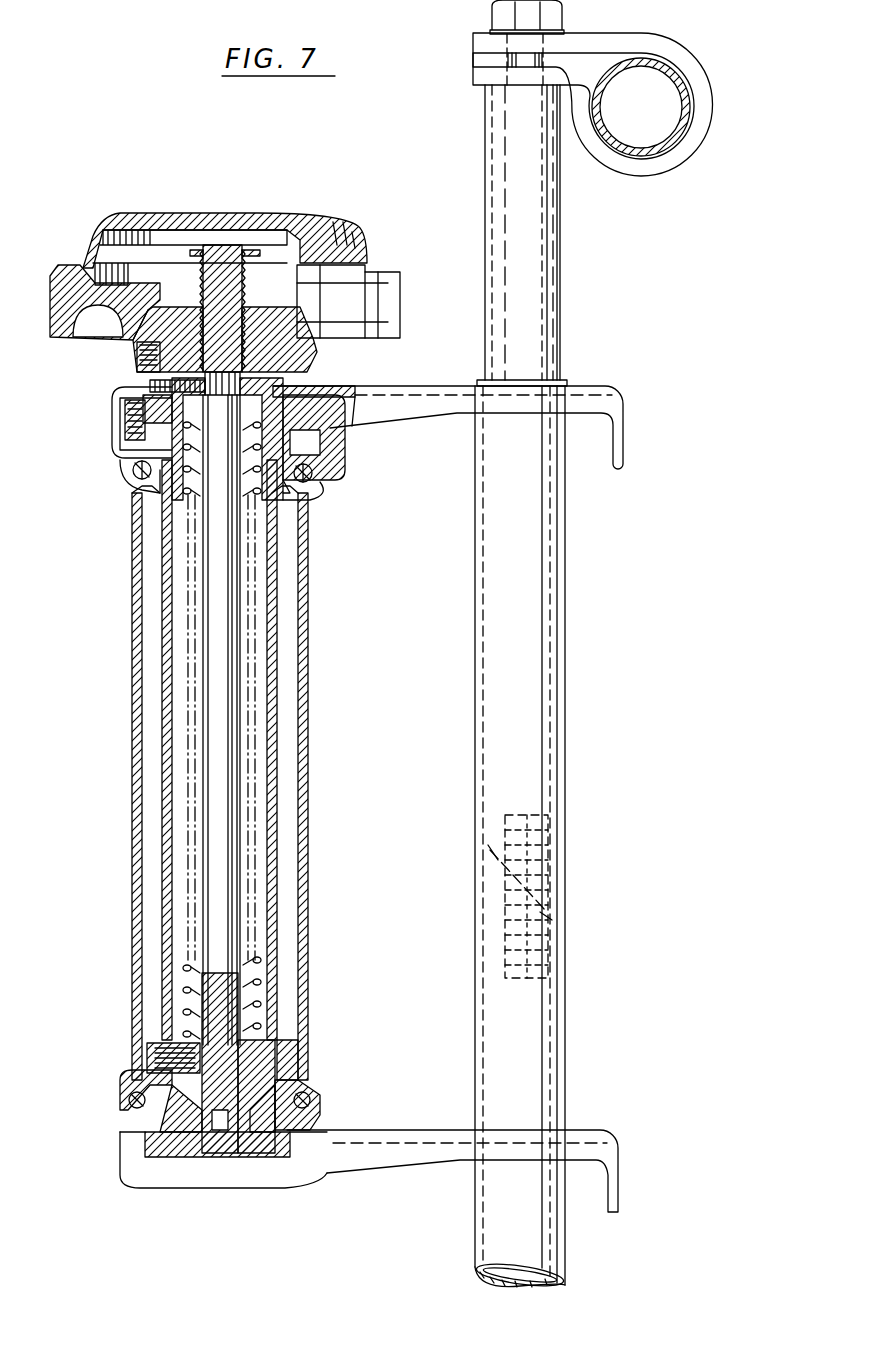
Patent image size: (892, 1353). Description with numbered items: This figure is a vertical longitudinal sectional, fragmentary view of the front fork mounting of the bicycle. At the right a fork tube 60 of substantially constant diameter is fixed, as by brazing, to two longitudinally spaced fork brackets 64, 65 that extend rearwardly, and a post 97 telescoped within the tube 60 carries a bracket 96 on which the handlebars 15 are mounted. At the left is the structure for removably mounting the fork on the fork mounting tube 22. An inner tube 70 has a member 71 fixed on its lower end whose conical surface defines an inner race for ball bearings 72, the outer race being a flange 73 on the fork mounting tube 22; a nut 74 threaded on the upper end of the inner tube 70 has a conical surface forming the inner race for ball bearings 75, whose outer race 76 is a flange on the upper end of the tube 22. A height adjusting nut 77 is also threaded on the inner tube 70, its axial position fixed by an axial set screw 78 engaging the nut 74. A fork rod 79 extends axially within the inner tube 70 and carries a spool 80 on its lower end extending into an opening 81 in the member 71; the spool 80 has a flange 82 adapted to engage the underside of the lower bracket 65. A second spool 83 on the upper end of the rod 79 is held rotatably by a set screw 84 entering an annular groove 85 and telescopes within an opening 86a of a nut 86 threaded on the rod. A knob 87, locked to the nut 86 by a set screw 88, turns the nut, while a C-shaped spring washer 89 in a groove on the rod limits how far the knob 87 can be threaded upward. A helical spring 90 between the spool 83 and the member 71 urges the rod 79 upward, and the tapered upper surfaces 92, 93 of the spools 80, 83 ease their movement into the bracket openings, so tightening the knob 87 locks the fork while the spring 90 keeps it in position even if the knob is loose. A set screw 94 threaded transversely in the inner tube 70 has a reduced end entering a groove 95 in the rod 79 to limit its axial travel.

The handlebars 15 is at (678, 104).
The fork mounting tube 22 is at (305, 733).
The fork tube 60 is at (565, 870).
The fork bracket 64 is at (623, 392).
The lower fork bracket 65 is at (618, 1137).
The inner tube 70 is at (285, 850).
The member 71 is at (280, 1120).
The ball bearings 72 is at (307, 1087).
The flange 73 is at (317, 1097).
The nut 74 is at (300, 463).
The ball bearings 75 is at (310, 487).
The outer race 76 is at (320, 473).
The height adjusting nut 77 is at (117, 432).
The set screw 78 is at (133, 408).
The fork rod 79 is at (222, 627).
The spool 80 is at (257, 1143).
The opening 81 is at (167, 1132).
The flange 82 is at (282, 1157).
The second spool 83 is at (267, 377).
The set screw 84 is at (150, 380).
The annular groove 85 is at (222, 397).
The nut 86 is at (253, 368).
The opening 86a is at (310, 360).
The knob 87 is at (50, 322).
The set screw 88 is at (134, 344).
The C-shaped spring washer 89 is at (250, 247).
The helical spring 90 is at (193, 475).
The tapered surface 92 is at (300, 1060).
The tapered surface 93 is at (272, 377).
The set screw 94 is at (203, 1058).
The groove 95 is at (210, 1010).
The bracket 96 is at (605, 45).
The post 97 is at (555, 190).